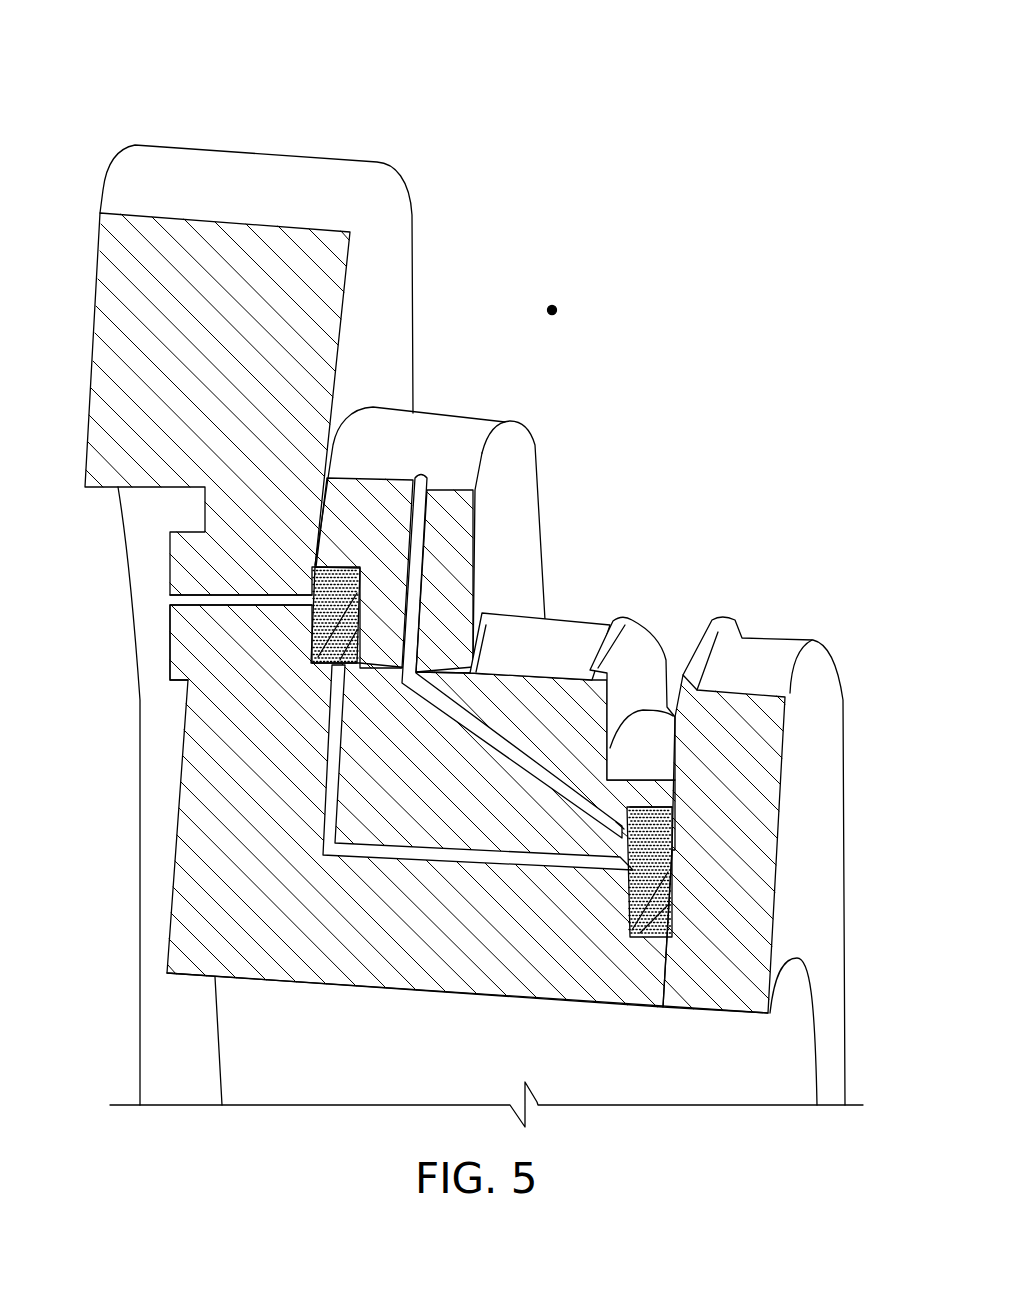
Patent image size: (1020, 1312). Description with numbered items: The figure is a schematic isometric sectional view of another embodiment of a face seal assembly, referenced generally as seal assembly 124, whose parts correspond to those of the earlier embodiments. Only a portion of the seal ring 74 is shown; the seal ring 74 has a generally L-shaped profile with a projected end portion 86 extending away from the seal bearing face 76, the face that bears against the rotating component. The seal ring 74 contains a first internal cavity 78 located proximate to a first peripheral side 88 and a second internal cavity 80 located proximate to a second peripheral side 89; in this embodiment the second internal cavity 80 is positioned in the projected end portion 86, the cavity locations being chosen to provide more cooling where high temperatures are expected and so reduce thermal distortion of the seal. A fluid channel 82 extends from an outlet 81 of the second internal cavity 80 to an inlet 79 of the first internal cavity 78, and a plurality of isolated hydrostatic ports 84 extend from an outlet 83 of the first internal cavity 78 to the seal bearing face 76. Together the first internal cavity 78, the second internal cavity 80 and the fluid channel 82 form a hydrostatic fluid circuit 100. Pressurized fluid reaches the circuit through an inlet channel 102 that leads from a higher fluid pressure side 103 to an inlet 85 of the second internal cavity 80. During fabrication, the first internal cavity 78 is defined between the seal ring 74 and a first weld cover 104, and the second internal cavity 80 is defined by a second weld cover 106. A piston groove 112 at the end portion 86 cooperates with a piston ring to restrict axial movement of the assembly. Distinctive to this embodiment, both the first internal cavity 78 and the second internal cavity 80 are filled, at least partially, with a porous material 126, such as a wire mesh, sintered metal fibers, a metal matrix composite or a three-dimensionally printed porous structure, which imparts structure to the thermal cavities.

The seal assembly 124 is at (150, 110).
The seal ring 74 is at (95, 313).
The seal bearing face 76 is at (160, 548).
The first internal cavity 78 is at (330, 575).
The inlet of the first internal cavity 79 is at (425, 600).
The second internal cavity 80 is at (647, 940).
The outlet of the second internal cavity 81 is at (630, 925).
The fluid channel 82 is at (330, 778).
The outlet of the first internal cavity 83 is at (313, 603).
The isolated hydrostatic port 84 is at (177, 600).
The inlet of the second internal cavity 85 is at (620, 820).
The projected end portion 86 is at (703, 1017).
The first peripheral side 88 is at (445, 372).
The second peripheral side 89 is at (440, 1015).
The hydrostatic fluid circuit 100 is at (228, 690).
The inlet channel 102 is at (430, 470).
The higher fluid pressure side 103 is at (560, 308).
The first weld cover 104 is at (545, 555).
The second weld cover 106 is at (775, 650).
The piston groove 112 is at (682, 615).
The porous material 126 is at (318, 578).